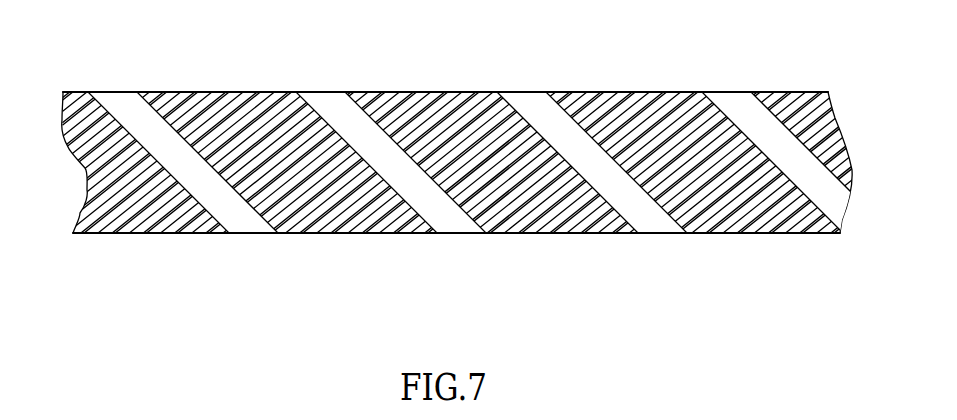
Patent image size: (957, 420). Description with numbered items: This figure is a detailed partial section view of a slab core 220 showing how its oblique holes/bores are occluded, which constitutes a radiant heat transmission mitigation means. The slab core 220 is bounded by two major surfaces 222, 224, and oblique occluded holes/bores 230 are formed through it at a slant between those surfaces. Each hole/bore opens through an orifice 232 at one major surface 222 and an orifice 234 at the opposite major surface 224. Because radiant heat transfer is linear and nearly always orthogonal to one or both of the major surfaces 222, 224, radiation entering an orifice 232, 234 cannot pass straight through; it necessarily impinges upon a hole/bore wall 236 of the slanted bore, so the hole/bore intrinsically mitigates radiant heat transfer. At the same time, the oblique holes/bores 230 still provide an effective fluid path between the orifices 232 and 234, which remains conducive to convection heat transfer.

The slab core 220 is at (131, 243).
The major surface 222 is at (390, 92).
The major surface 224 is at (366, 233).
The oblique occluded holes/bores 230 is at (457, 162).
The orifice 232 is at (112, 92).
The orifice 234 is at (257, 233).
The hole/bore wall 236 is at (457, 162).